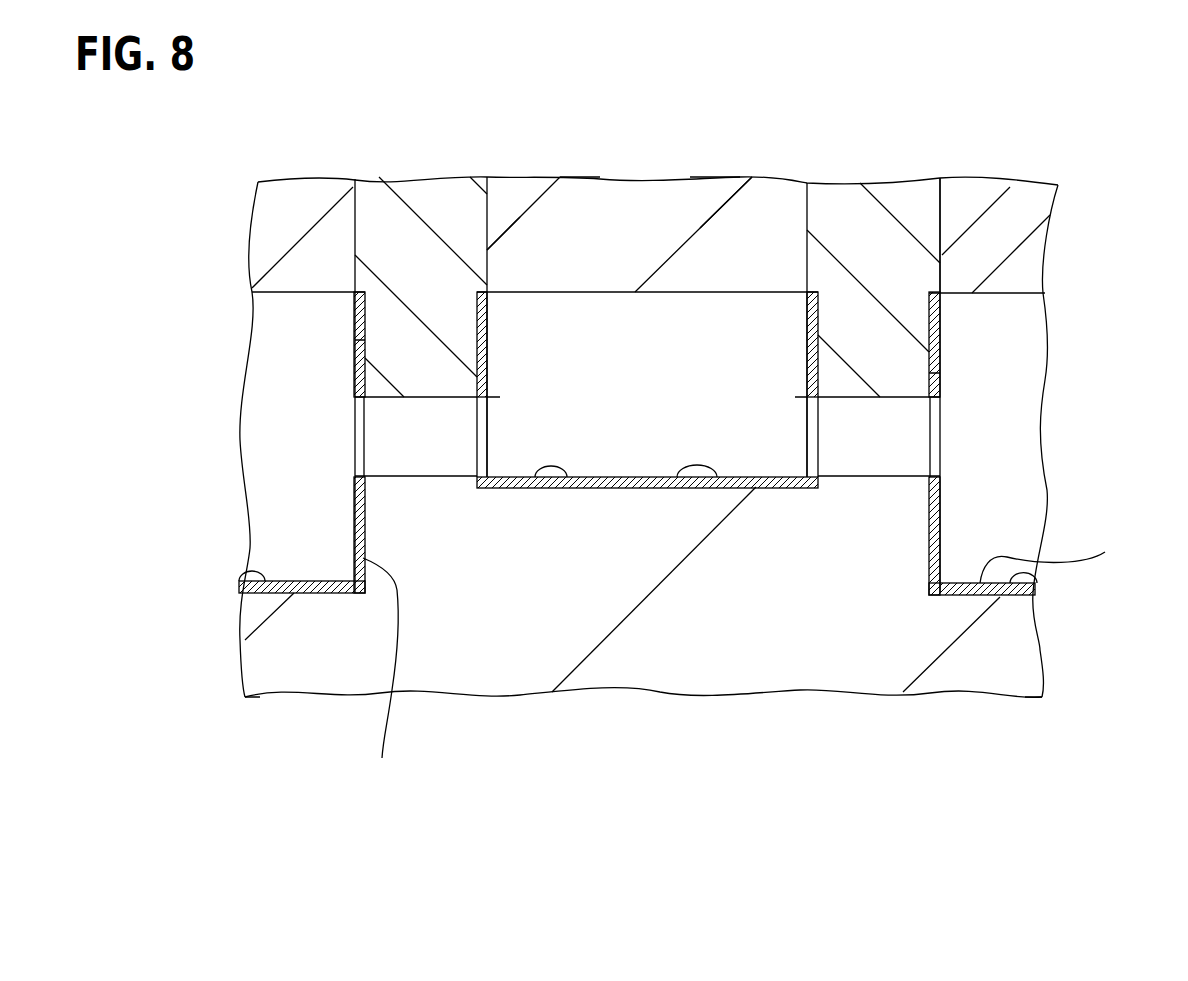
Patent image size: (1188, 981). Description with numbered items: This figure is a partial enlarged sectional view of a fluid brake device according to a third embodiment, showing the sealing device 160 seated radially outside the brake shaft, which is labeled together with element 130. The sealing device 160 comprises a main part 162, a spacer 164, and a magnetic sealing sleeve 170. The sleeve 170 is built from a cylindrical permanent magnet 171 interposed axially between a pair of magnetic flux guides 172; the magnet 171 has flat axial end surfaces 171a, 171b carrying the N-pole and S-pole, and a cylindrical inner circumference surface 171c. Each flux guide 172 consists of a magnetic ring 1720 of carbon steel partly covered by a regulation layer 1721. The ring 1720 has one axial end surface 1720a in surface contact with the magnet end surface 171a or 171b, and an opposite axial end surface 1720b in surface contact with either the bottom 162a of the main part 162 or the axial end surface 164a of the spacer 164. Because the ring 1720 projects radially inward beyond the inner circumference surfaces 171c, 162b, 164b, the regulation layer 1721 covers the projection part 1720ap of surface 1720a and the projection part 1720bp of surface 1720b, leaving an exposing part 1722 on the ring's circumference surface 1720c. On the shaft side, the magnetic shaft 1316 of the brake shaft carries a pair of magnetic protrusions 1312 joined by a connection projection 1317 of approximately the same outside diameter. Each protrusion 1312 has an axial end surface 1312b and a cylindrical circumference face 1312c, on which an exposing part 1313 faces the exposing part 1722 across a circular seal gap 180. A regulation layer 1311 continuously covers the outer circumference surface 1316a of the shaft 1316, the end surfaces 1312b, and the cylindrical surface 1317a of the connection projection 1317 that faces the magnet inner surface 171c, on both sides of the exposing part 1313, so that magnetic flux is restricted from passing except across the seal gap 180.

The sealing device 160 is at (255, 172).
The main part 162 is at (305, 193).
The bottom of main part 162a is at (350, 218).
The inner circumference surface of main part 162b is at (297, 292).
The spacer 164 is at (1018, 200).
The axial end surface of spacer 164a is at (1058, 187).
The inner circumference surface of spacer 164b is at (990, 293).
The magnetic sealing sleeve 170 is at (943, 170).
The permanent magnet 171 is at (690, 195).
The axial end surface of permanent magnet 171a is at (485, 253).
The axial end surface of permanent magnet 171b is at (808, 257).
The inner circumference surface of permanent magnet 171c is at (607, 302).
The magnetic flux guide 172 is at (383, 198).
The magnetic ring 1720 is at (355, 325).
The axial end surface of magnetic ring 1720a is at (490, 278).
The projection part of axial end surface 1720ap is at (807, 381).
The axial end surface of magnetic ring 1720b is at (360, 290).
The projection part of axial end surface 1720bp is at (355, 342).
The circumference surface of magnetic ring 1720c is at (807, 414).
The regulation layer 1721 is at (353, 360).
The exposing part 1722 is at (395, 408).
The seal gap 180 is at (393, 440).
The base 130 is at (1040, 647).
The regulation layer 1311 is at (318, 593).
The magnetic protrusion 1312 is at (407, 522).
The axial end surface of protrusion 1312b is at (353, 537).
The circumference face of protrusion 1312c is at (807, 448).
The exposing part 1313 is at (353, 457).
The magnetic shaft 1316 is at (655, 660).
The outer circumference surface of magnetic shaft 1316a is at (298, 582).
The connection projection 1317 is at (523, 483).
The cylindrical surface of connection projection 1317a is at (720, 488).